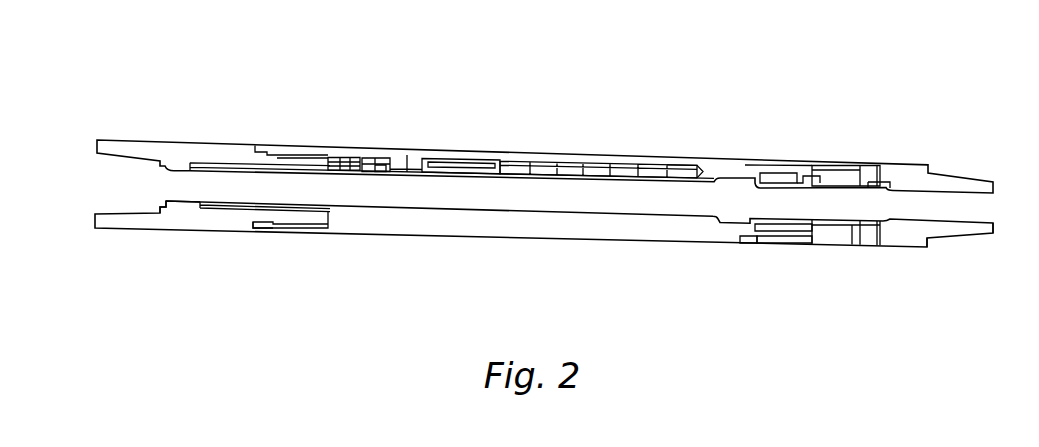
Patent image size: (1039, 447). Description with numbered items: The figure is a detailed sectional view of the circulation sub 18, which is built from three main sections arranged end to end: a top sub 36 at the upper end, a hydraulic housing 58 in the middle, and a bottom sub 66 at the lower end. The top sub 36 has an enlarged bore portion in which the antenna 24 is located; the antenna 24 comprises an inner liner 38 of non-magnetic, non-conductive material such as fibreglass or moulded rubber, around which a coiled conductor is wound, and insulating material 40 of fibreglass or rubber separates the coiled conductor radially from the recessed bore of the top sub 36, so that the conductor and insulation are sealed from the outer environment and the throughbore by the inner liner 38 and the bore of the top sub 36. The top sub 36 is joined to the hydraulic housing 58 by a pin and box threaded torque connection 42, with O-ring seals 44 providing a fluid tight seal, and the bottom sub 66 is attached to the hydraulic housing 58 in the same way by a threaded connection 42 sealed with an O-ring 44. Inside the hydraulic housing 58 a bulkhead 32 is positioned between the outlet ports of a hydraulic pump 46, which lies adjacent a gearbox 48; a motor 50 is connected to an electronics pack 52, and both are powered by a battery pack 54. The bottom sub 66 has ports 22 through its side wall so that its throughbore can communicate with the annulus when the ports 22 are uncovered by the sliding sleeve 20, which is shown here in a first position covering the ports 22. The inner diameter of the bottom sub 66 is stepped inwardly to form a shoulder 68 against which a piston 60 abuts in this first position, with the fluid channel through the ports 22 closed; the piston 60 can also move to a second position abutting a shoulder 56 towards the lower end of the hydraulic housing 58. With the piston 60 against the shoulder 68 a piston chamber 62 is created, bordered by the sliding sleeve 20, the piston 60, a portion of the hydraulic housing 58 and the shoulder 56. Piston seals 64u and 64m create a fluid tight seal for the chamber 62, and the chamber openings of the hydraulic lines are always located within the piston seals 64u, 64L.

The circulation sub 18 is at (117, 128).
The sliding sleeve 20 is at (845, 178).
The ports 22 is at (866, 178).
The antenna 24 is at (225, 165).
The bulkhead 32 is at (335, 158).
The top sub 36 is at (167, 218).
The inner liner 38 is at (223, 207).
The insulating material 40 is at (202, 208).
The threaded connection 42 is at (300, 225).
The O-ring seals 44 is at (265, 227).
The hydraulic pump 46 is at (362, 160).
The gearbox 48 is at (378, 172).
The motor 50 is at (408, 165).
The electronics pack 52 is at (465, 160).
The battery pack 54 is at (680, 165).
The shoulder 56 is at (770, 227).
The hydraulic housing 58 is at (540, 227).
The piston 60 is at (807, 227).
The piston chamber 62 is at (781, 173).
The piston seal 64u is at (756, 167).
The piston seal 64m is at (810, 177).
The piston seal 64L is at (850, 227).
The bottom sub 66 is at (920, 233).
The shoulder 68 is at (812, 178).